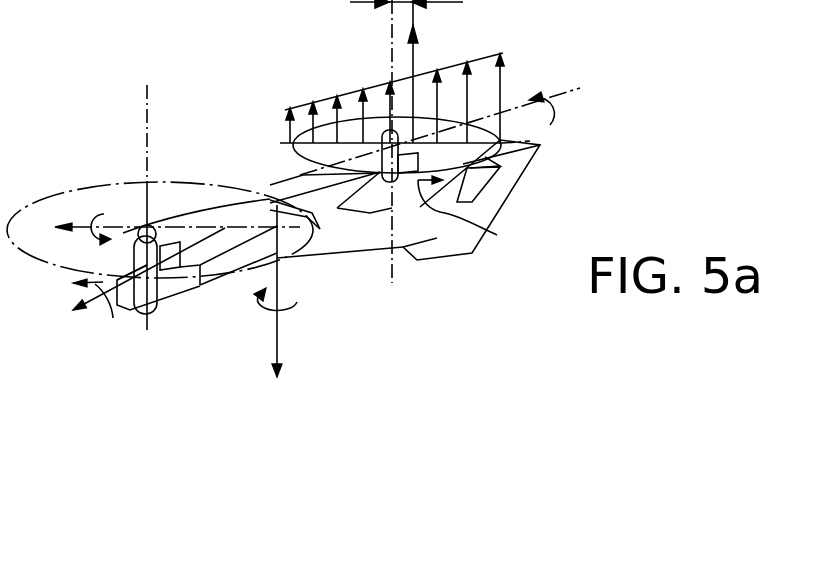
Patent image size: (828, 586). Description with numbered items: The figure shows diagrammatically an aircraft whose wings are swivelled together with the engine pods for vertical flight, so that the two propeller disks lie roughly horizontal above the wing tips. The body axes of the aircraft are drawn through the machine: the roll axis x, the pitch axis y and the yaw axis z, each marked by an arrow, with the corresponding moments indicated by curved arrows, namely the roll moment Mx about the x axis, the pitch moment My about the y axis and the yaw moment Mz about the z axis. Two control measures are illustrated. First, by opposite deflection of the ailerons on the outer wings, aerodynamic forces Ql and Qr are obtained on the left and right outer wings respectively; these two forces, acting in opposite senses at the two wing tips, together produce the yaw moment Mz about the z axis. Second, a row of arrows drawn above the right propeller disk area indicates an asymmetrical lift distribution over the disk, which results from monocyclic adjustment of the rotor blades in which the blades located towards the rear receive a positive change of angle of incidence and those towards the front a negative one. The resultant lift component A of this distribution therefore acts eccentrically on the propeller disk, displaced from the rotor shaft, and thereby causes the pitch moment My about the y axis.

The lift component A is at (424, 71).
The roll moment Mx is at (111, 219).
The pitch moment My is at (556, 94).
The yaw moment Mz is at (293, 258).
The aerodynamic force on right outer wing Qr is at (468, 205).
The aerodynamic force on left outer wing Ql is at (98, 314).
The roll axis x is at (61, 216).
The pitch axis y is at (146, 285).
The yaw axis z is at (285, 339).